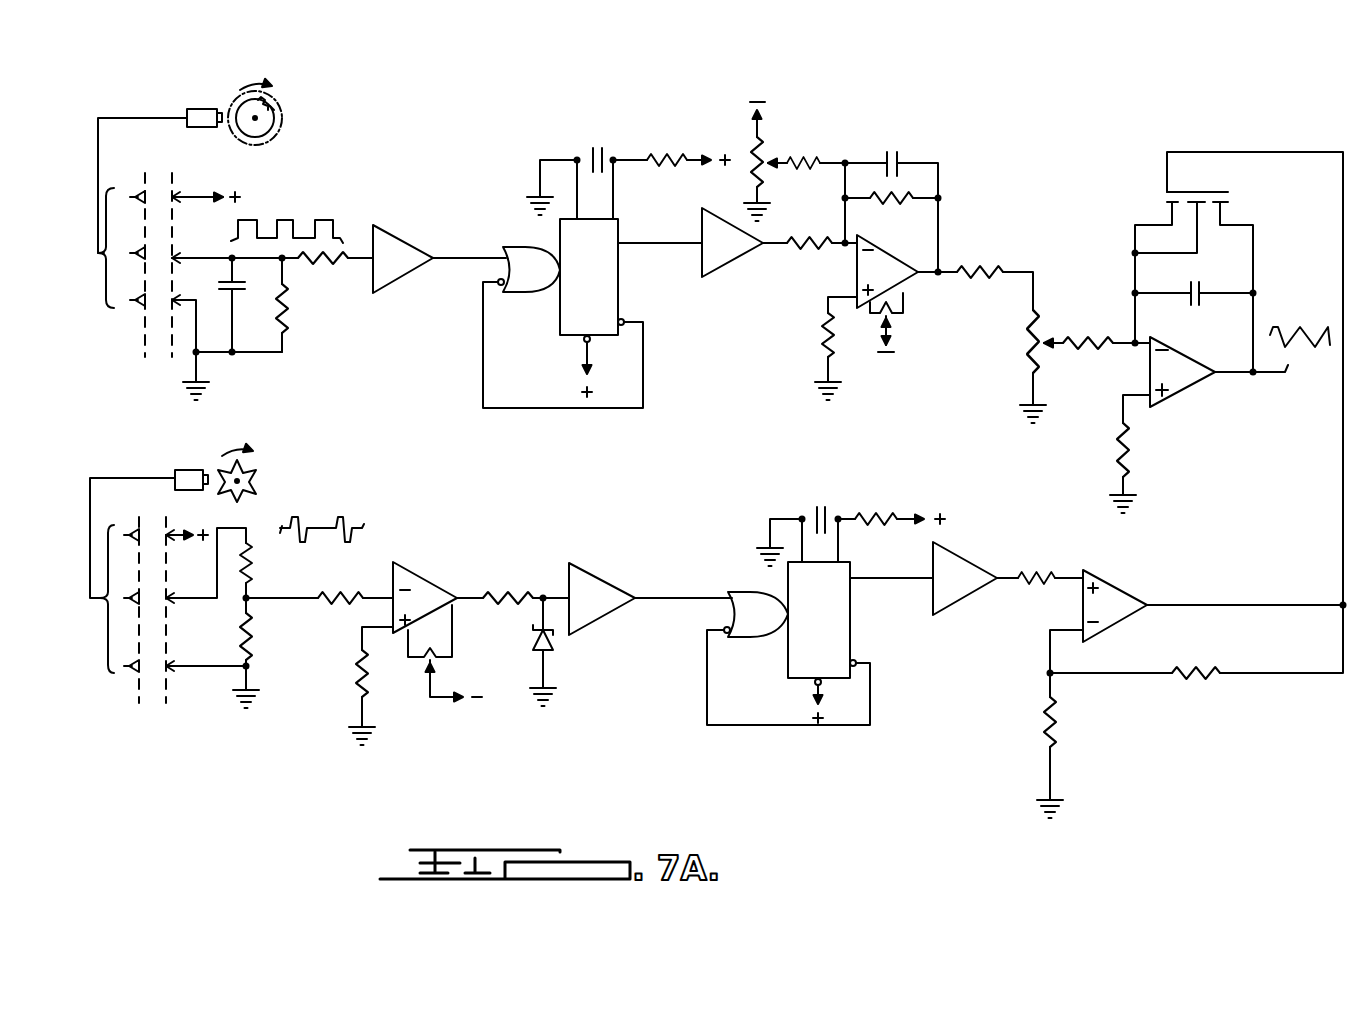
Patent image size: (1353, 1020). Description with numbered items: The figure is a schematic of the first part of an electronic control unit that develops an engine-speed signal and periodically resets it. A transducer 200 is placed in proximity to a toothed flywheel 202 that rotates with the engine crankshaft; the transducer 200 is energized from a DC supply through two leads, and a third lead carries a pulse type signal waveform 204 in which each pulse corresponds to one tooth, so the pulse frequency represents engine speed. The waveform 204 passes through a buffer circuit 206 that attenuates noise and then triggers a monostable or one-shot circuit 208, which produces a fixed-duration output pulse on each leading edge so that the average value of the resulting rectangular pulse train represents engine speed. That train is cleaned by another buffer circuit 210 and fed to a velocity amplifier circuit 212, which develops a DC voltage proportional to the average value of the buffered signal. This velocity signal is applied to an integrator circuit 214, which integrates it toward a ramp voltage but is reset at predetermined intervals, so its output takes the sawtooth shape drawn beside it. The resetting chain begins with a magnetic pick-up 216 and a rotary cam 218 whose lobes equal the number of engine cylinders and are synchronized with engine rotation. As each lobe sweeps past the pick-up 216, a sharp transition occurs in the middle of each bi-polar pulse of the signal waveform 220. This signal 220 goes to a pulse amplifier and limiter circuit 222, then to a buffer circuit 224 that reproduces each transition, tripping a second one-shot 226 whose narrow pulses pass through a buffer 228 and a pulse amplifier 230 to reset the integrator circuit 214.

The transducer 200 is at (201, 109).
The toothed flywheel 202 is at (282, 118).
The pulse type signal waveform 204 is at (304, 214).
The buffer circuit 206 is at (412, 232).
The monostable (one-shot) circuit 208 is at (637, 302).
The buffer circuit 210 is at (745, 264).
The velocity amplifier circuit 212 is at (915, 298).
The integrator circuit 214 is at (1110, 272).
The magnetic pick-up 216 is at (190, 470).
The rotary cam 218 is at (257, 477).
The signal waveform 220 is at (330, 515).
The pulse amplifier and limiter circuit 222 is at (428, 572).
The buffer circuit 224 is at (608, 578).
The second one-shot 226 is at (862, 635).
The buffer 228 is at (962, 550).
The pulse amplifier 230 is at (1120, 582).